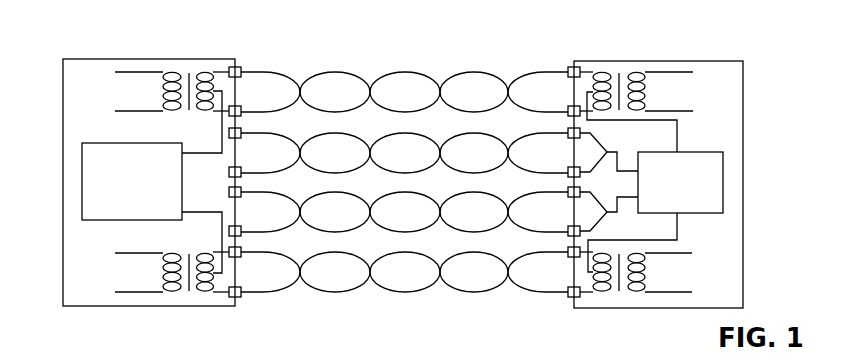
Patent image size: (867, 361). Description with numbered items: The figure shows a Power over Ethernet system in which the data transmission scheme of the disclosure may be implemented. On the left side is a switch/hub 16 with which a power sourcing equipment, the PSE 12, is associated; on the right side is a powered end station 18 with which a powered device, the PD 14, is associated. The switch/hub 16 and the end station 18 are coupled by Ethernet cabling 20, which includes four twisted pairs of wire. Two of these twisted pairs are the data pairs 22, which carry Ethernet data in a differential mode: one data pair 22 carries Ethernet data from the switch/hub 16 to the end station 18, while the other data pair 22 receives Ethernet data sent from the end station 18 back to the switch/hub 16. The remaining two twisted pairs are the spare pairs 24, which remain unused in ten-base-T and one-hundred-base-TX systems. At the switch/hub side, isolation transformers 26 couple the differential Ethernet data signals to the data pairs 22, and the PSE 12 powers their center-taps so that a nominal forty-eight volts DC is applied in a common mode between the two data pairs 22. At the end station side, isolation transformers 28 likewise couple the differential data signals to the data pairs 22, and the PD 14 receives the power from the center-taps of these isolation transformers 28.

The Ethernet cabling 20 is at (420, 28).
The switch/hub 16 is at (207, 59).
The PSE 12 is at (82, 210).
The isolation transformers 26 is at (203, 117).
The data pairs 22 is at (268, 72).
The spare pairs 24 is at (268, 133).
The powered end station 18 is at (743, 90).
The PD 14 is at (692, 152).
The isolation transformers 28 is at (601, 108).